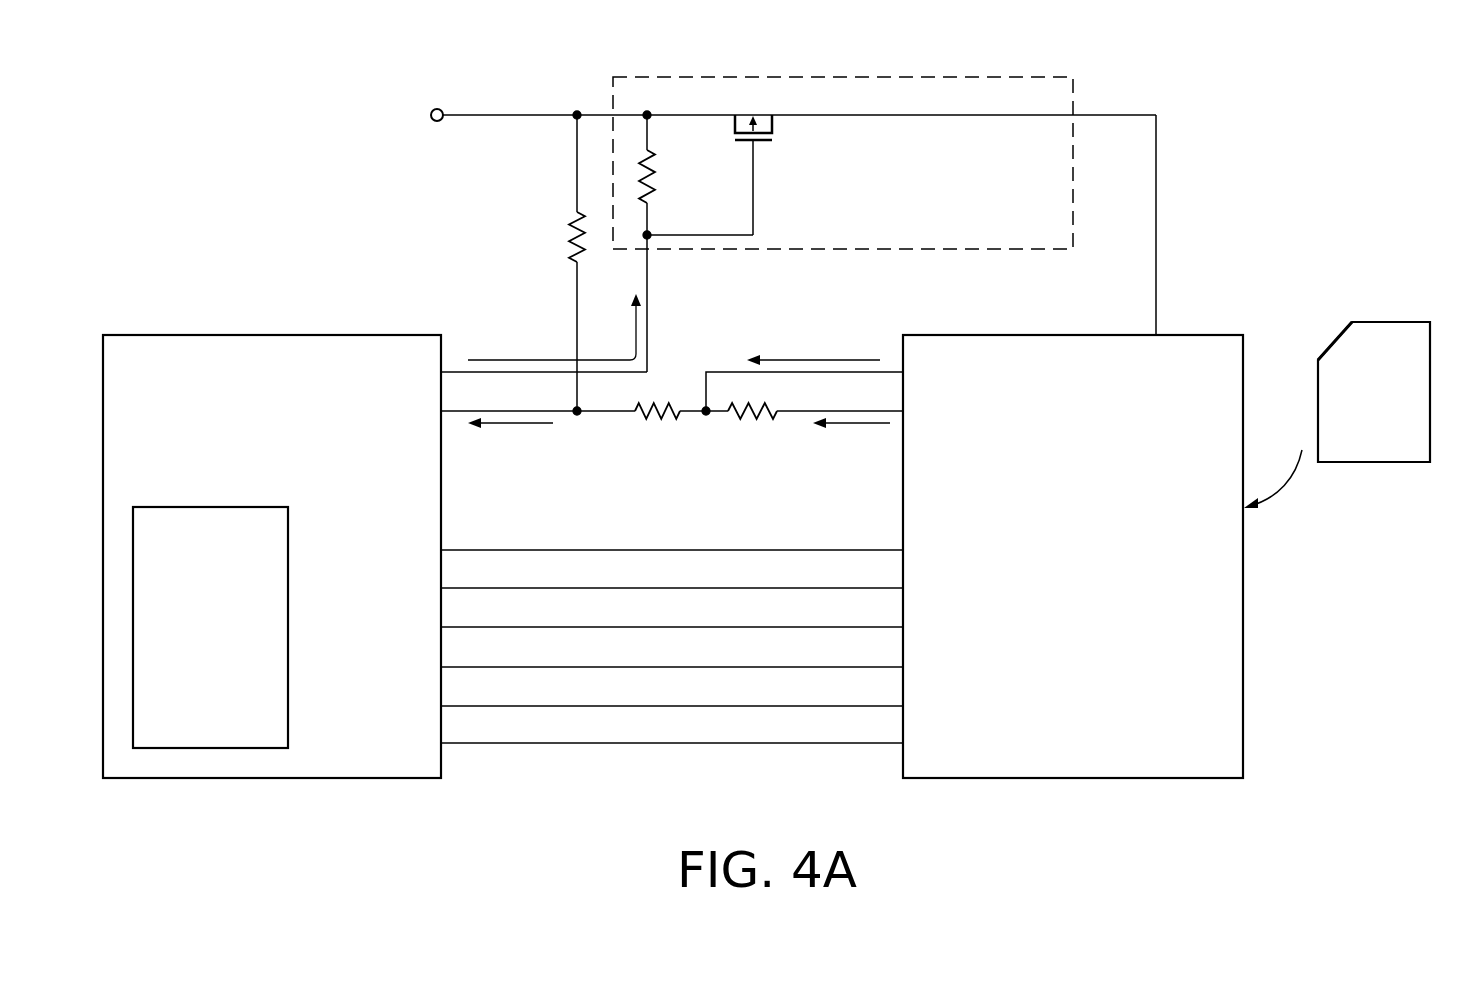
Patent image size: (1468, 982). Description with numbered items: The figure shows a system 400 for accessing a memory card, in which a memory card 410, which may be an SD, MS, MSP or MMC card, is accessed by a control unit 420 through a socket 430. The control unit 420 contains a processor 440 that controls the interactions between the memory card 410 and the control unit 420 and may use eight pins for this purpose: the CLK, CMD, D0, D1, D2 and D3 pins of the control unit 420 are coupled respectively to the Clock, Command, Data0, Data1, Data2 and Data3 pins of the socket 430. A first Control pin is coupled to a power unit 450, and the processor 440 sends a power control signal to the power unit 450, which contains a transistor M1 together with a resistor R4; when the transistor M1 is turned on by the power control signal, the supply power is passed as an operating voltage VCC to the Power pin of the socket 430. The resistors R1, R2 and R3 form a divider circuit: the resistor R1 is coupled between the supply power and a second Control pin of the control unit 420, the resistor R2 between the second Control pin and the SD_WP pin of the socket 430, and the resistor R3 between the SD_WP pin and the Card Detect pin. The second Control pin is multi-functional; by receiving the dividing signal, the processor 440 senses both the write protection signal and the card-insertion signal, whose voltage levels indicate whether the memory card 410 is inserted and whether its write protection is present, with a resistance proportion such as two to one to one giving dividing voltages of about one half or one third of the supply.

The system 400 is at (1368, 862).
The memory card 410 is at (1392, 320).
The control unit 420 is at (103, 335).
The socket 430 is at (903, 335).
The processor 440 is at (133, 507).
The power unit 450 is at (845, 79).
The resistor R1 is at (571, 226).
The resistor R2 is at (658, 420).
The resistor R3 is at (744, 420).
The resistor R4 is at (657, 172).
The transistor M1 is at (760, 143).